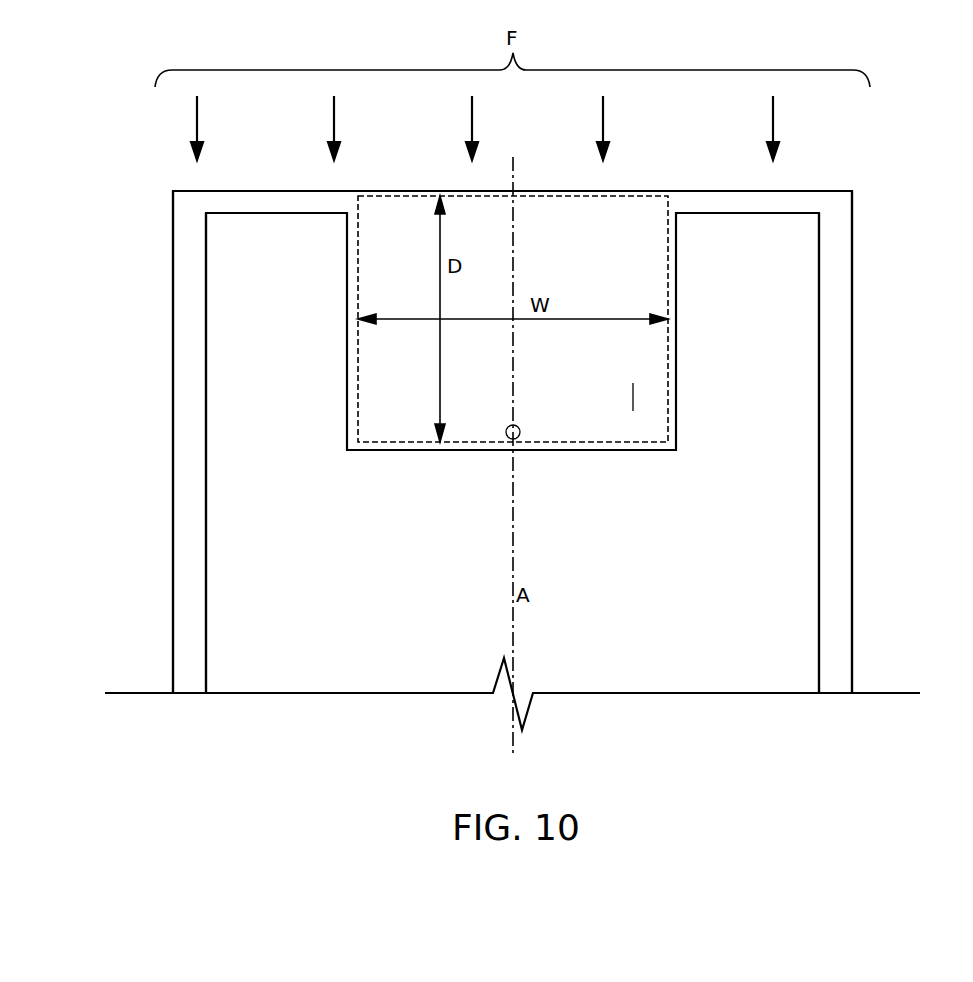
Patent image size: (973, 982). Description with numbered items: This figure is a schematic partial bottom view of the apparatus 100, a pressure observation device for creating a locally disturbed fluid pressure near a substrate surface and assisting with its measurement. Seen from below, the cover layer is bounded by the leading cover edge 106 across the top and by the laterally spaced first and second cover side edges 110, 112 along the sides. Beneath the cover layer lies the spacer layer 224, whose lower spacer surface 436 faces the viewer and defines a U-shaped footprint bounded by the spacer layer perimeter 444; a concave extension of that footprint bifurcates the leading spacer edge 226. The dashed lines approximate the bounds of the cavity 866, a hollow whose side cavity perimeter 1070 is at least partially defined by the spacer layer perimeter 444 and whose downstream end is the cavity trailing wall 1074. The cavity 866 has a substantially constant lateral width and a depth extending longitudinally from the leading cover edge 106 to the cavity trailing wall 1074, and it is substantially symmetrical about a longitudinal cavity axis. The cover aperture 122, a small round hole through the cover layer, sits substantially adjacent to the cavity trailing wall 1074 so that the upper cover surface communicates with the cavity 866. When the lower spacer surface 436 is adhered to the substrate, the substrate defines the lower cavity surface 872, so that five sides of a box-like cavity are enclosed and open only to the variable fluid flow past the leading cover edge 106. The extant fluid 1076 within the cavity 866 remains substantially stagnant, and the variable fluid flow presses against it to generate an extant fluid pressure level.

The apparatus 100 is at (880, 214).
The leading cover edge 106 is at (836, 191).
The first cover side edge 110 is at (173, 488).
The second cover side edge 112 is at (852, 457).
The cover aperture 122 is at (519, 427).
The spacer layer 224 is at (709, 680).
The leading spacer edge 226 is at (262, 213).
The lower spacer surface 436 is at (512, 571).
The spacer layer perimeter 444 is at (513, 319).
The cavity 866 is at (576, 218).
The lower cavity surface 872 is at (633, 396).
The side cavity perimeter 1070 is at (668, 350).
The cavity trailing wall 1074 is at (597, 444).
The extant fluid 1076 is at (513, 257).